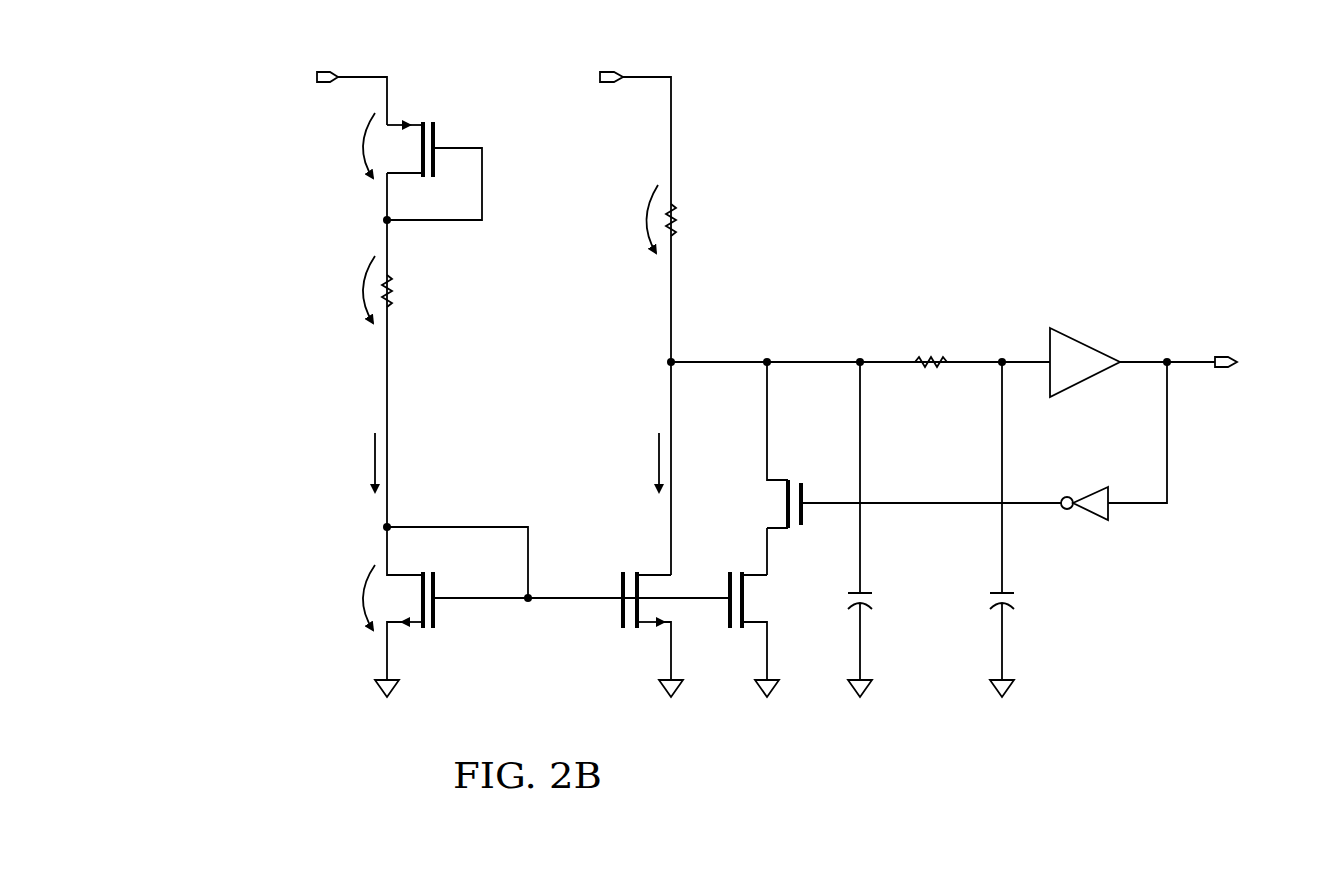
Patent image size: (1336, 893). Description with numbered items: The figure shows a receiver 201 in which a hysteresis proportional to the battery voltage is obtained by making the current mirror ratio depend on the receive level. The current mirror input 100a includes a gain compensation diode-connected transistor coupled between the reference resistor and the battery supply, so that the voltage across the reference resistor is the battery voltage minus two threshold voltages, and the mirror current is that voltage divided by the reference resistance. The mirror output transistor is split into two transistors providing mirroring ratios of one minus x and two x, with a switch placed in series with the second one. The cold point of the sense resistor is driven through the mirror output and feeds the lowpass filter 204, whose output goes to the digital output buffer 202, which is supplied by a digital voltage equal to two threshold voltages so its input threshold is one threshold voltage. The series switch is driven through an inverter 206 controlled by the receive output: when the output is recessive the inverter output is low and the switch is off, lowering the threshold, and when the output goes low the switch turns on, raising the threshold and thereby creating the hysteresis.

The current mirror input 100a is at (336, 707).
The receiver circuit 201 is at (969, 181).
The digital output buffer 202 is at (1085, 384).
The lowpass filter 204 is at (1042, 710).
The inverter 206 is at (1090, 520).